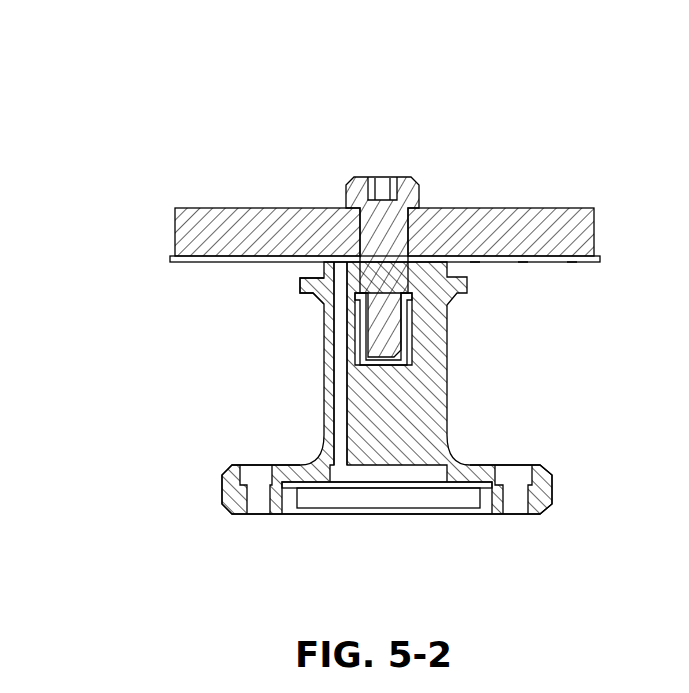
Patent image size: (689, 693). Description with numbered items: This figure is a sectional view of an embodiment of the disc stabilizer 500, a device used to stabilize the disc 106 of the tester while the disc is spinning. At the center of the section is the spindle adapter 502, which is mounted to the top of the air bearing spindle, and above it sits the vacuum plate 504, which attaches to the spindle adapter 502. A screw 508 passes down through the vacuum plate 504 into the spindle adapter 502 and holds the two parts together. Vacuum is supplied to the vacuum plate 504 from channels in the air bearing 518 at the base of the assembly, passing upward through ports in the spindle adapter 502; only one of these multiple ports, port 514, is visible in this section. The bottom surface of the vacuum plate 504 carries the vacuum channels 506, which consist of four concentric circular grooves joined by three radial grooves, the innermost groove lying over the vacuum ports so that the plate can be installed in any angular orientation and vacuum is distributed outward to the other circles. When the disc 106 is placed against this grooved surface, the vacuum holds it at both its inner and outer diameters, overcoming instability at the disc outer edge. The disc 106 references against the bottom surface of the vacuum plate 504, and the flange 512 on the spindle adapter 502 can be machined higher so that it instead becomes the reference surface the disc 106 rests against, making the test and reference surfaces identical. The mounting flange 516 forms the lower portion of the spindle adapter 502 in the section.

The disc stabilizer 500 is at (332, 302).
The spindle adapter 502 is at (377, 421).
The vacuum plate 504 is at (513, 207).
The vacuum channels 506 is at (475, 262).
The screw 508 is at (348, 180).
The flange 512 is at (300, 280).
The port 514 is at (338, 365).
The mounting flange 516 is at (247, 515).
The air bearing 518 is at (392, 515).
The disc 106 is at (313, 310).